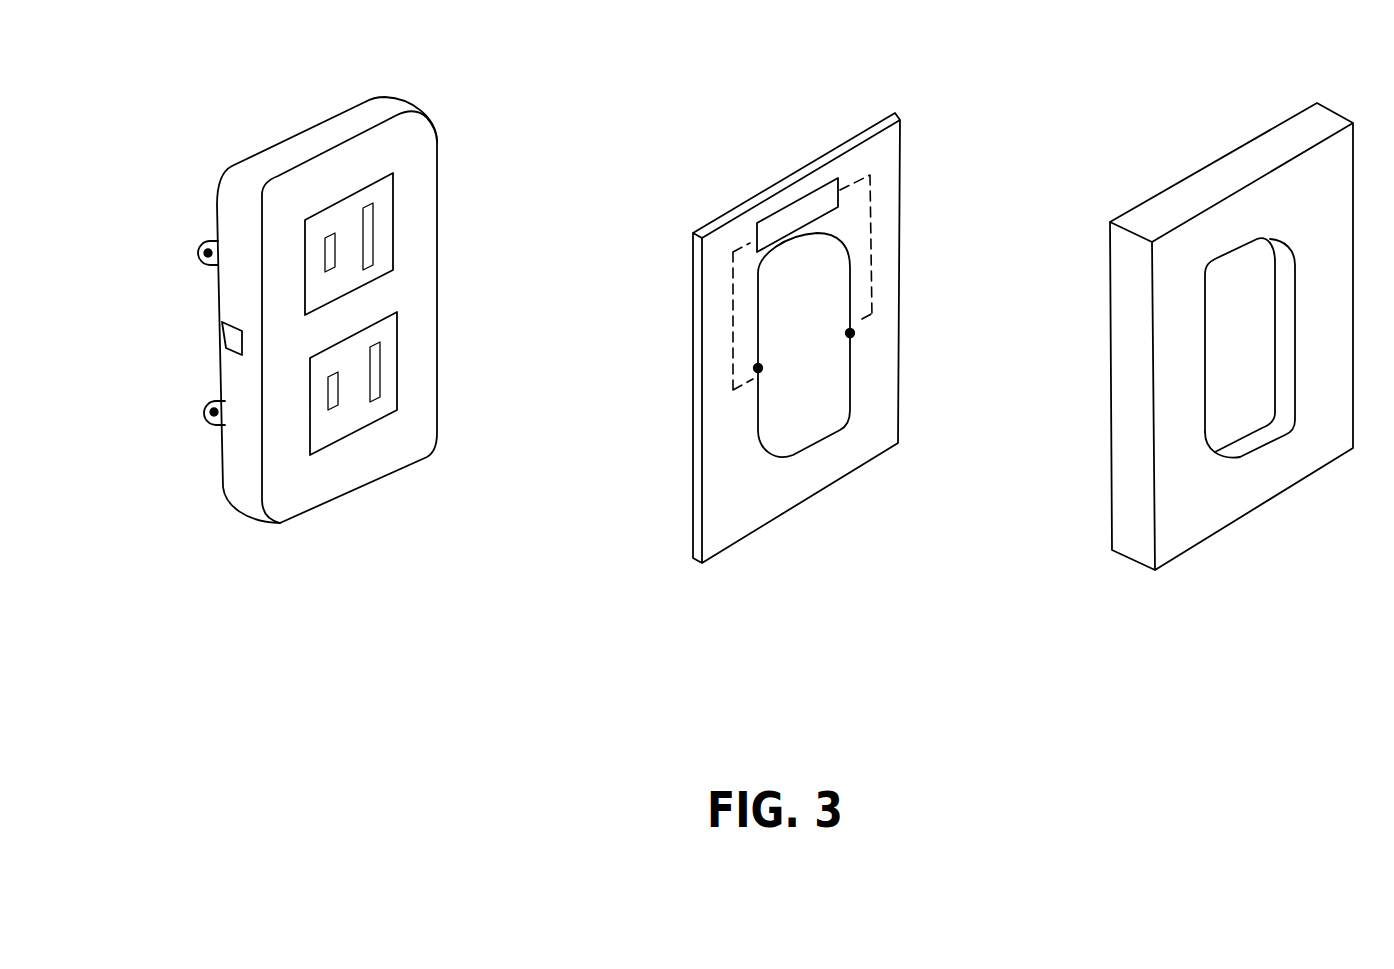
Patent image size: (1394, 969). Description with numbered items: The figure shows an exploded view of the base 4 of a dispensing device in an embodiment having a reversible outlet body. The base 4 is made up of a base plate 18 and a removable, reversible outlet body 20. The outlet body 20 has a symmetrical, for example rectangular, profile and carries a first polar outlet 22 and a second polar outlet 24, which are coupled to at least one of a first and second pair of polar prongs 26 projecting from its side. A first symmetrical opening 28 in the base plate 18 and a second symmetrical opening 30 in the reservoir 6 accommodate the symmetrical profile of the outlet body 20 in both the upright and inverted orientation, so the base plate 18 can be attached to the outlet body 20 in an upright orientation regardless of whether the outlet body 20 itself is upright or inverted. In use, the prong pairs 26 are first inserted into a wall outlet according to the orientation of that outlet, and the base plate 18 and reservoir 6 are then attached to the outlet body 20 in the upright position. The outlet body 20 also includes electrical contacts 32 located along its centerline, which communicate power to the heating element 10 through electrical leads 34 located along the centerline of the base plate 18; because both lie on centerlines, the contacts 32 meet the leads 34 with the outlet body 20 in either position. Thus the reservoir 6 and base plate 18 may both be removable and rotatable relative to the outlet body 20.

The base 4 is at (550, 65).
The reservoir 6 is at (1233, 167).
The heating element 10 is at (777, 230).
The base plate 18 is at (867, 130).
The outlet body 20 is at (303, 146).
The first polar outlet 22 is at (397, 387).
The second polar outlet 24 is at (393, 208).
The polar prongs 26 is at (203, 412).
The first symmetrical opening 28 is at (833, 417).
The second symmetrical opening 30 is at (1247, 412).
The electrical contacts 32 is at (227, 348).
The electrical leads 34 is at (850, 333).